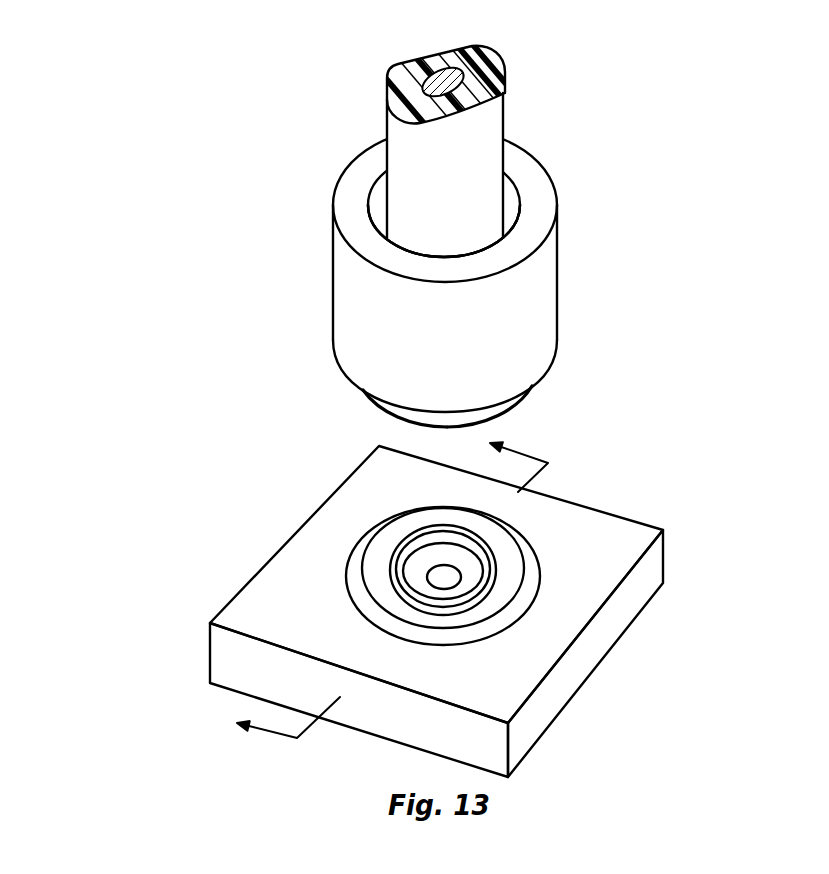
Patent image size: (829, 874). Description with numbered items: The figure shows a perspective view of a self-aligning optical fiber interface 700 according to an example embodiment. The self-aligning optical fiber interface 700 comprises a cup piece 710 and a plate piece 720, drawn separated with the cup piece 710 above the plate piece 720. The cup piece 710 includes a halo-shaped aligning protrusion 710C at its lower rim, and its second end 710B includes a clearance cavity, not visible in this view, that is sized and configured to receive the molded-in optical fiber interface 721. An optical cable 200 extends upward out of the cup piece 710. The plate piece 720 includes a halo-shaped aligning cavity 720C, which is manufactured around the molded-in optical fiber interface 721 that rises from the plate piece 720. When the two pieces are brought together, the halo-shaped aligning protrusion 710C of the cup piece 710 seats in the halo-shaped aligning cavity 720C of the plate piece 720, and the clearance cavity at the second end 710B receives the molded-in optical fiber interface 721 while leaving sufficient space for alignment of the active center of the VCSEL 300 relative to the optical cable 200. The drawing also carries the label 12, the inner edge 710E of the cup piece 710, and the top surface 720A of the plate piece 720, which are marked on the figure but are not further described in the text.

The section line of FIG. 12 is at (396, 597).
The optical cable 200 is at (427, 157).
The VCSEL 300 is at (438, 577).
The self-aligning optical fiber interface 700 is at (343, 157).
The cup piece 710 is at (530, 272).
The second end 710B is at (352, 383).
The halo-shaped aligning protrusion 710C is at (520, 404).
The sleeve inner edge 710E is at (510, 190).
The plate piece 720 is at (633, 603).
The base plate top surface 720A is at (600, 540).
The halo-shaped aligning cavity 720C is at (520, 547).
The molded-in optical fiber interface 721 is at (420, 533).